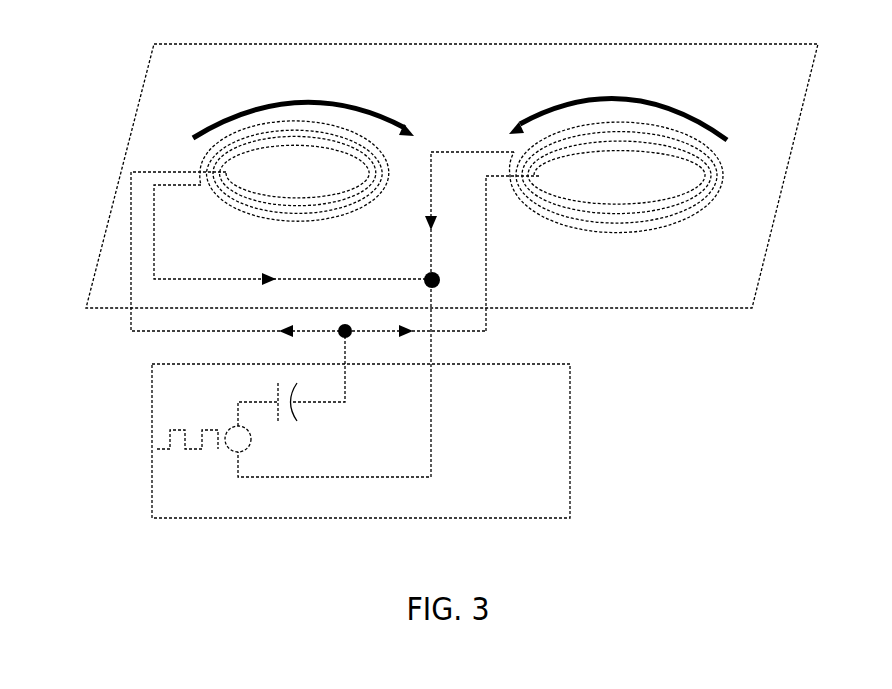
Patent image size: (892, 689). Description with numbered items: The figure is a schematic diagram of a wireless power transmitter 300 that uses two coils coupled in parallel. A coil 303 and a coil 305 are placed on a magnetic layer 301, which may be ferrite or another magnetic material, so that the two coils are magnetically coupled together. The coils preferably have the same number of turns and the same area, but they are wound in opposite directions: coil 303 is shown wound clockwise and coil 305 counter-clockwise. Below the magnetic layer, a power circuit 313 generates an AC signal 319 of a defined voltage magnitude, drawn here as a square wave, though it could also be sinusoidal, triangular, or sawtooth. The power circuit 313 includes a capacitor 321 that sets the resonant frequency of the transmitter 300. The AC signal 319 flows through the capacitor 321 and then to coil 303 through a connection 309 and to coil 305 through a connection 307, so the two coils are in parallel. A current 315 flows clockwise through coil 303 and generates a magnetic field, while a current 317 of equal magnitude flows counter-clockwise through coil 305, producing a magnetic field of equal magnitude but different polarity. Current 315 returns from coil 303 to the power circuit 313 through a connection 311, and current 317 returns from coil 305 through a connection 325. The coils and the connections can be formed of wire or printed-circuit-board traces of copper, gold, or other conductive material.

The wireless power transmitter 300 is at (121, 102).
The magnetic layer 301 is at (740, 43).
The coil 303 is at (317, 230).
The coil 305 is at (640, 233).
The connection 307 is at (486, 265).
The connection 309 is at (137, 333).
The connection 311 is at (187, 279).
The power circuit 313 is at (570, 478).
The current 315 is at (297, 100).
The current 317 is at (643, 100).
The AC signal 319 is at (201, 464).
The capacitor 321 is at (292, 433).
The connection 325 is at (432, 152).